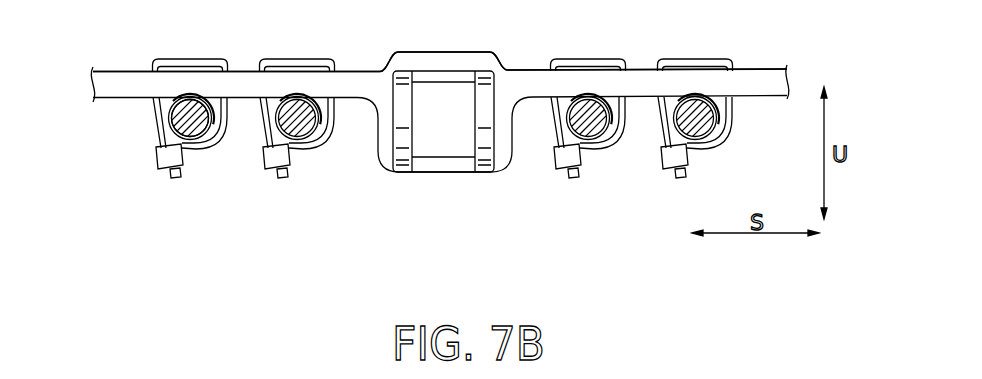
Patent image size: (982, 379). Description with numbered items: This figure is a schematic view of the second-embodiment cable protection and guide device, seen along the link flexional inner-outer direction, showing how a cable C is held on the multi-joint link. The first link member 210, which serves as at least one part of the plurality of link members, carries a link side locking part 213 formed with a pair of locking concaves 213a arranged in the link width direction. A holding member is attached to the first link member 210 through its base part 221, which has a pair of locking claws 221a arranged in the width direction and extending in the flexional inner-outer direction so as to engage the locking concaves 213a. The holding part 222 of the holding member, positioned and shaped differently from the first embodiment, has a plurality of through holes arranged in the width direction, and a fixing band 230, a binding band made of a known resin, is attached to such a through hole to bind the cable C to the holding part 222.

The first link member 210 is at (440, 157).
The link side locking part 213 is at (418, 190).
The locking concaves 213a is at (402, 153).
The base part 221 is at (491, 121).
The locking claws 221a is at (500, 160).
The holding part 222 is at (305, 82).
The fixing band 230 is at (191, 60).
The cable C is at (208, 147).